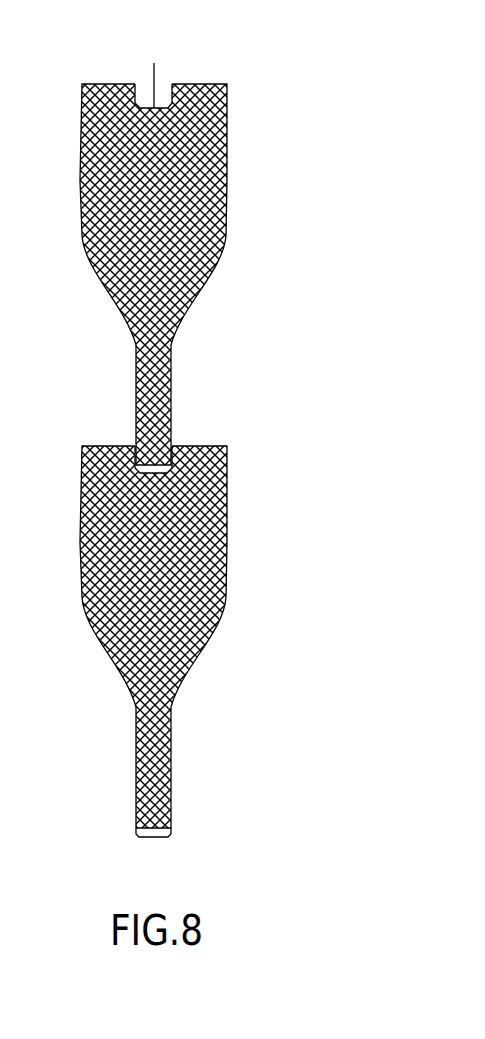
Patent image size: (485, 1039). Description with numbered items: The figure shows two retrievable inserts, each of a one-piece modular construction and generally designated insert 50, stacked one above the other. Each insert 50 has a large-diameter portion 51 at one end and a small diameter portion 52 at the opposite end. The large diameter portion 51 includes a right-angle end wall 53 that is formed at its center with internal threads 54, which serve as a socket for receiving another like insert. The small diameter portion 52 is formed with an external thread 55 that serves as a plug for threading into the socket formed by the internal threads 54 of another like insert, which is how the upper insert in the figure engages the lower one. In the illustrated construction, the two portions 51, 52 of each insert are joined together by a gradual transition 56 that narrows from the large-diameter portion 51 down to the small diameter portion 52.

The insert 50 is at (274, 144).
The large-diameter portion 51 is at (80, 163).
The small diameter portion 52 is at (172, 391).
The right-angle end wall 53 is at (102, 84).
The internal threads 54 is at (163, 92).
The external thread 55 is at (155, 838).
The gradual transition 56 is at (187, 307).